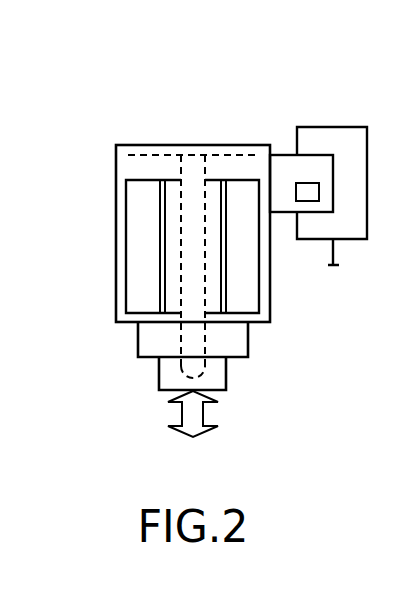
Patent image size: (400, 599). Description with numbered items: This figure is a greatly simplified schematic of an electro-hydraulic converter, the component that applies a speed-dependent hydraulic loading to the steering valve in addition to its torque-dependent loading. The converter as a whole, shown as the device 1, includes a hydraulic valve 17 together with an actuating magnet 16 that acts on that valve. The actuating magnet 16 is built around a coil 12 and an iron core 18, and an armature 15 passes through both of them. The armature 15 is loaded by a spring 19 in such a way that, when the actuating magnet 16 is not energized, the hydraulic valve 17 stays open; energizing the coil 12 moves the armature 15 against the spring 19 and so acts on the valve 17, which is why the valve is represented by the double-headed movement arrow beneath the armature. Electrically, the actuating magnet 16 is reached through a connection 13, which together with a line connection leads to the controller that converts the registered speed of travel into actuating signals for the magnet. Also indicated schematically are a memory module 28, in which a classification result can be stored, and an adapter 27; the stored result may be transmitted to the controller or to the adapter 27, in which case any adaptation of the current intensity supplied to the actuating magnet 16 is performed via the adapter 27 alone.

The actuator device 1 is at (338, 253).
The coil 12 is at (132, 216).
The connection 13 is at (288, 157).
The armature 15 is at (177, 344).
The actuating magnet 16 is at (196, 129).
The hydraulic valve 17 is at (240, 403).
The iron core 18 is at (156, 292).
The spring 19 is at (121, 137).
The adapter 27 is at (347, 137).
The memory module 28 is at (309, 197).